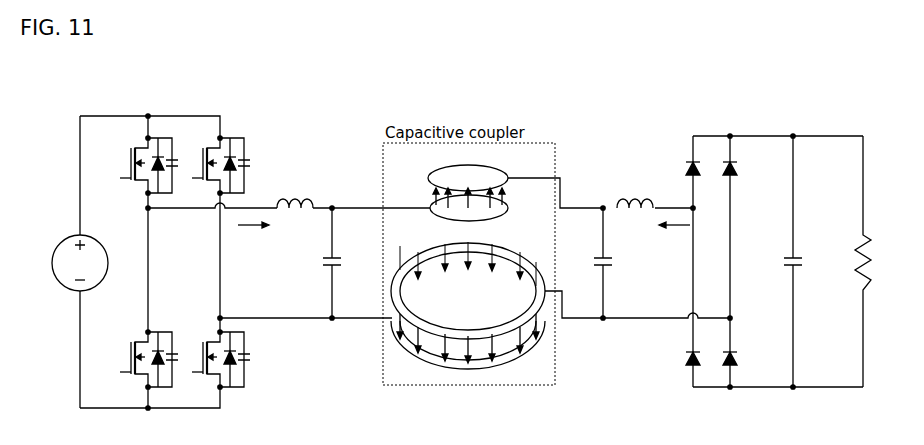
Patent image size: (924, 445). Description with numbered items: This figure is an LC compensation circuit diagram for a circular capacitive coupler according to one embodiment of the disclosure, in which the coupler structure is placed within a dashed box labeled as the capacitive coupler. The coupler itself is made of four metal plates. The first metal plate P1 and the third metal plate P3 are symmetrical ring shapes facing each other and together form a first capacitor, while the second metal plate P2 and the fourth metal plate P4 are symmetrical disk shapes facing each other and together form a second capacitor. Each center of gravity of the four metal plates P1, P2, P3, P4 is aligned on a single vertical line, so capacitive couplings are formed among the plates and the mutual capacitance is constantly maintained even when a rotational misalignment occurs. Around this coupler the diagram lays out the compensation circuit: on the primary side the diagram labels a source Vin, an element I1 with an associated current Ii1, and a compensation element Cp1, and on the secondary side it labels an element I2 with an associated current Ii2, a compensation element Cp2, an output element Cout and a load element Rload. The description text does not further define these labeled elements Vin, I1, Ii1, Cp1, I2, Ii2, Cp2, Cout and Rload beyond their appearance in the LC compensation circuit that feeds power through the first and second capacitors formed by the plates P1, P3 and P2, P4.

The input voltage source Vin is at (80, 262).
The primary inductor I1 is at (295, 195).
The primary current Ii1 is at (253, 236).
The primary compensation capacitor Cp1 is at (318, 263).
The first metal plate P1 is at (418, 366).
The second metal plate P2 is at (432, 213).
The third metal plate P3 is at (421, 342).
The fourth metal plate P4 is at (432, 174).
The secondary inductor I2 is at (655, 195).
The secondary current Ii2 is at (674, 236).
The secondary compensation capacitor Cp2 is at (615, 263).
The output capacitor Cout is at (775, 261).
The load resistor Rload is at (841, 261).